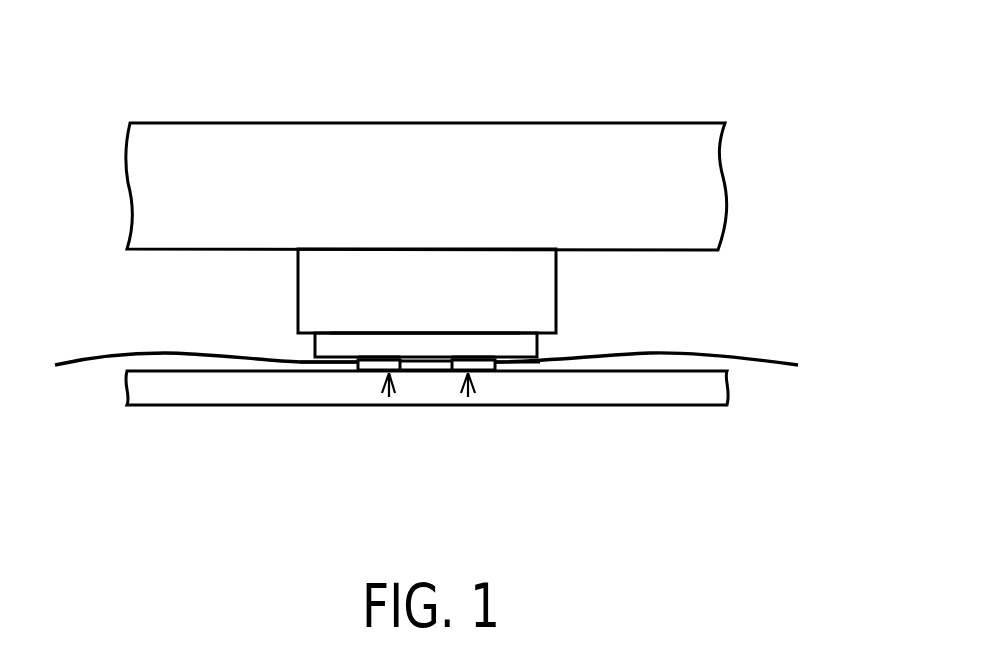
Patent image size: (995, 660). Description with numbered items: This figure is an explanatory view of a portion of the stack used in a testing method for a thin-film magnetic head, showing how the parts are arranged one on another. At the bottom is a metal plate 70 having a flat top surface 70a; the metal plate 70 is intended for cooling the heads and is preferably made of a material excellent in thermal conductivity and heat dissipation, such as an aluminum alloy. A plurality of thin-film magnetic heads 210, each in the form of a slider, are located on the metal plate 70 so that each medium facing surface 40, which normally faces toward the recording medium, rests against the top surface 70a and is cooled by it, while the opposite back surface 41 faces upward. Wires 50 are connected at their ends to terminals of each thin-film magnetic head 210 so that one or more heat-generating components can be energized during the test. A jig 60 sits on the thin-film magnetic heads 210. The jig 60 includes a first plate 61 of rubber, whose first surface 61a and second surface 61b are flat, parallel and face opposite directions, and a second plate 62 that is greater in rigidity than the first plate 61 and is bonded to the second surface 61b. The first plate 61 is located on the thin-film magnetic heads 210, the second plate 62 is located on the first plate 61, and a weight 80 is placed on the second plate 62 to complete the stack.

The weight 80 is at (563, 123).
The jig 60 is at (598, 297).
The second plate 62 is at (556, 283).
The first plate 61 is at (538, 348).
The second surface 61b is at (423, 333).
The first surface 61a is at (420, 361).
The back surface 41 is at (380, 360).
The medium facing surface 40 is at (367, 405).
The thin-film magnetic head 210 is at (387, 405).
The metal plate 70 is at (629, 405).
The top surface 70a is at (155, 372).
The wires 50 is at (98, 368).